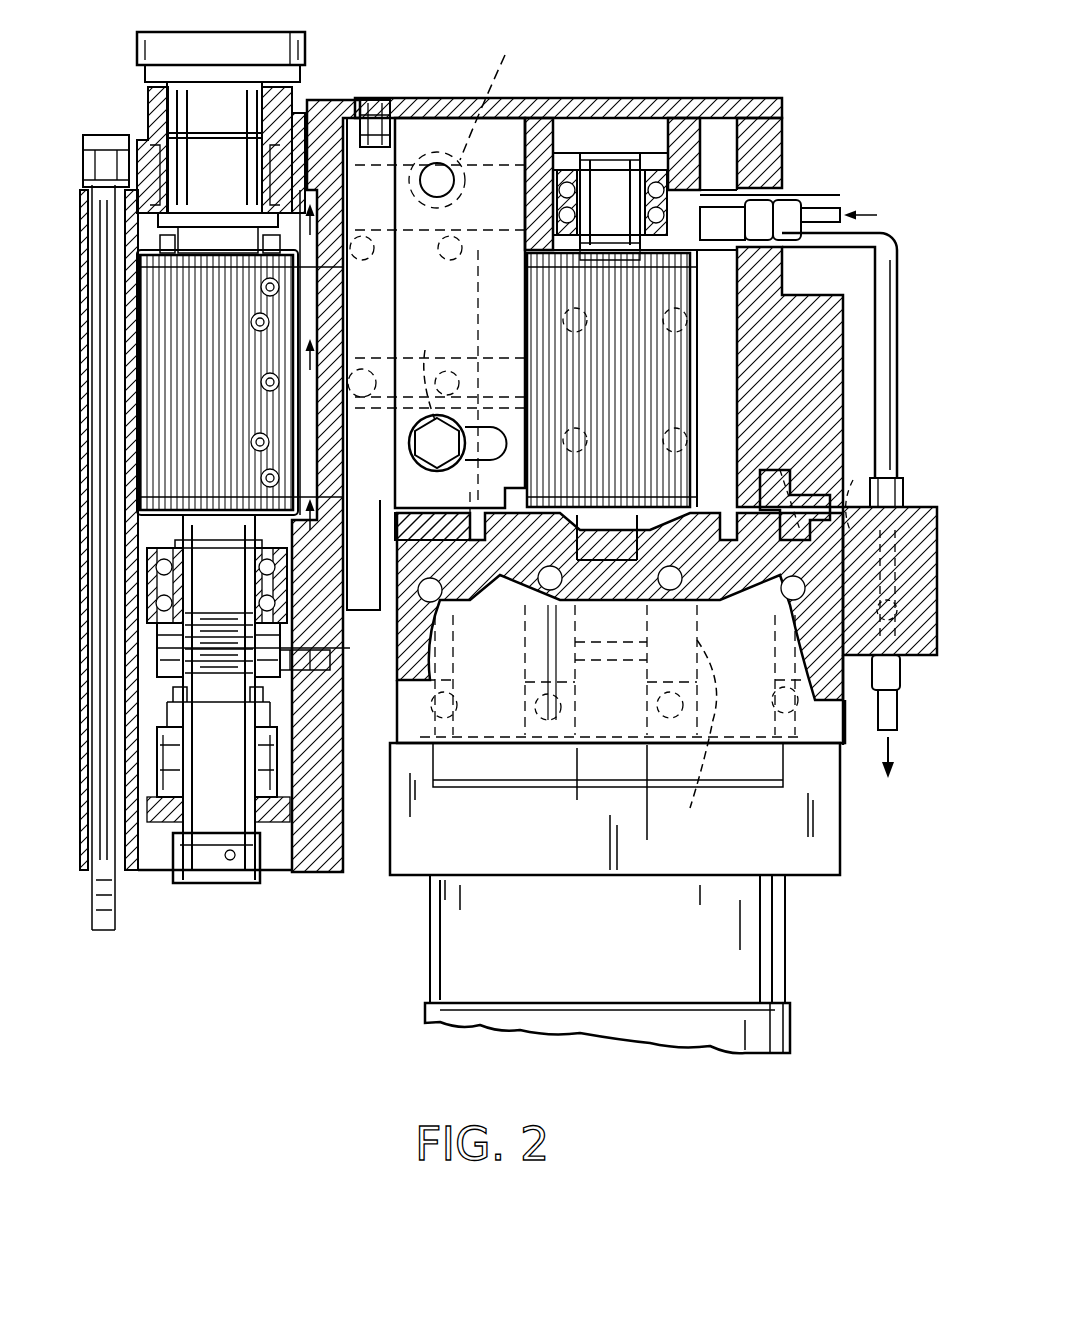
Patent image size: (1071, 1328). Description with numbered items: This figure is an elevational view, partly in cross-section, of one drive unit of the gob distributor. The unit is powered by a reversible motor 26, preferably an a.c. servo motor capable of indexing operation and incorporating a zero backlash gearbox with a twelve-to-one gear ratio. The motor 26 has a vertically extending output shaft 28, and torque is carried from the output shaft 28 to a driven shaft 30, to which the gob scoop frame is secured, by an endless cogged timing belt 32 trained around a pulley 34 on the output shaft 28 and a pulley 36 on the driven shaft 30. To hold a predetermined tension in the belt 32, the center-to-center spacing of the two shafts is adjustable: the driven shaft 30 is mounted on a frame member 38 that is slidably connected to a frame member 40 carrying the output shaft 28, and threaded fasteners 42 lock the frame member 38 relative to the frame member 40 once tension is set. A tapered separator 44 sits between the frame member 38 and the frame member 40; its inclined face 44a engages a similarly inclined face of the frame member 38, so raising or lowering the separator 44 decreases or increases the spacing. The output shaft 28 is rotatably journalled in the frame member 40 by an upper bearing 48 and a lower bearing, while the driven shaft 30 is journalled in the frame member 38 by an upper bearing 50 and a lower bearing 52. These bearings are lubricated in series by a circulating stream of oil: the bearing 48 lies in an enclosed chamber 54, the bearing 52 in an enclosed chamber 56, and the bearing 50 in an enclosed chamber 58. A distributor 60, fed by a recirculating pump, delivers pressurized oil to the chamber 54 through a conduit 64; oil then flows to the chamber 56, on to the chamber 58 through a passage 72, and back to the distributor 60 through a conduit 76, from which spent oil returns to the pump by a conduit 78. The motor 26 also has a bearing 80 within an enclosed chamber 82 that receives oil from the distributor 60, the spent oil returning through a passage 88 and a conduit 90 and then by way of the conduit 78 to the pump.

The motor 26 is at (790, 962).
The output shaft 28 is at (790, 118).
The driven shaft 30 is at (200, 235).
The endless cogged timing belt 32 is at (600, 118).
The pulley 34 is at (700, 380).
The pulley 36 is at (155, 400).
The frame member 38 is at (320, 160).
The frame member 40 is at (660, 180).
The threaded fasteners 42 is at (474, 220).
The tapered separator 44 is at (400, 150).
The inclined face 44a is at (375, 545).
The upper bearing 48 is at (590, 140).
The upper bearing 50 is at (180, 150).
The lower bearing 52 is at (160, 605).
The enclosed chamber 54 is at (655, 130).
The enclosed chamber 56 is at (160, 590).
The enclosed chamber 58 is at (160, 120).
The distributor 60 is at (920, 660).
The conduit 64 is at (818, 208).
The passage 72 is at (360, 318).
The conduit 76 is at (545, 118).
The conduit 78 is at (870, 700).
The bearing 80 is at (621, 676).
The enclosed chamber 82 is at (777, 715).
The passage 88 is at (760, 500).
The conduit 90 is at (885, 480).